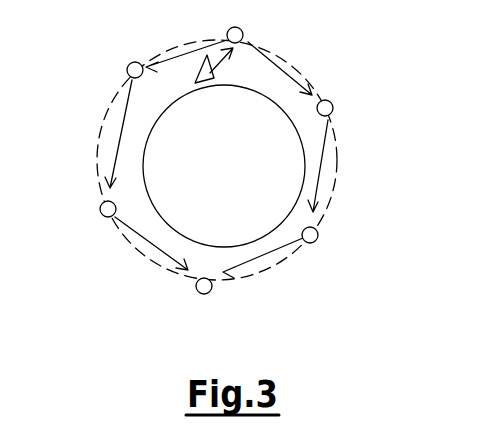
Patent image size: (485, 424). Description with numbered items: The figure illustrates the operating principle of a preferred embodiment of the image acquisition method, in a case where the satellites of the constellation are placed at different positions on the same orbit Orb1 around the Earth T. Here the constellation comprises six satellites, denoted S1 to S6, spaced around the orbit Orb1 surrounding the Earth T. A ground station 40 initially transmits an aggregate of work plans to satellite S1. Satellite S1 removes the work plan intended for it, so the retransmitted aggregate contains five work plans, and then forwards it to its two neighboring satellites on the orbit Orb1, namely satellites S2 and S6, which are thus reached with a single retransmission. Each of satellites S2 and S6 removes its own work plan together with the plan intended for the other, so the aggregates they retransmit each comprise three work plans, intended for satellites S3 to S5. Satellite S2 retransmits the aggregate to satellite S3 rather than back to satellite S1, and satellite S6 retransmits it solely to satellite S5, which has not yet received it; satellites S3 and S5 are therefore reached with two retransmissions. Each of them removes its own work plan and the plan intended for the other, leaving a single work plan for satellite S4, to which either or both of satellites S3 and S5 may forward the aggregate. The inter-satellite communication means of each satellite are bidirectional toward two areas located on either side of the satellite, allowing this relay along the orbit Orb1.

The satellite S1 is at (243, 35).
The satellite S2 is at (333, 106).
The satellite S3 is at (318, 233).
The satellite S4 is at (204, 294).
The satellite S5 is at (100, 210).
The satellite S6 is at (132, 66).
The ground station 40 is at (213, 80).
The Earth T is at (270, 100).
The orbit Orb1 is at (335, 147).